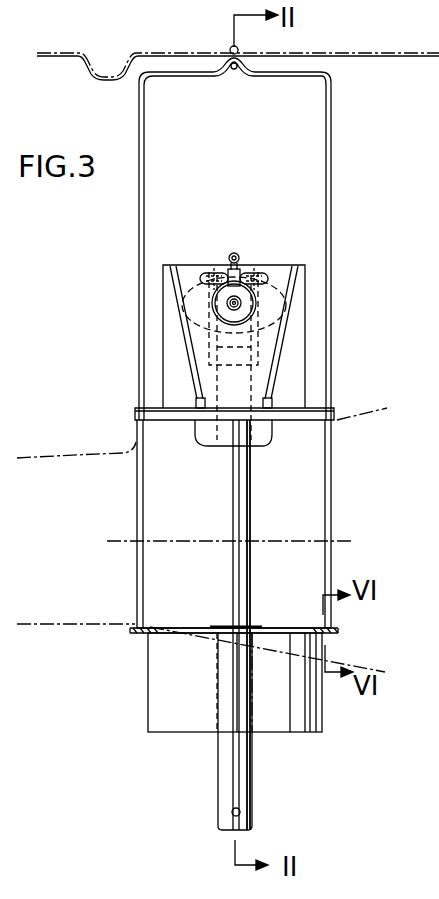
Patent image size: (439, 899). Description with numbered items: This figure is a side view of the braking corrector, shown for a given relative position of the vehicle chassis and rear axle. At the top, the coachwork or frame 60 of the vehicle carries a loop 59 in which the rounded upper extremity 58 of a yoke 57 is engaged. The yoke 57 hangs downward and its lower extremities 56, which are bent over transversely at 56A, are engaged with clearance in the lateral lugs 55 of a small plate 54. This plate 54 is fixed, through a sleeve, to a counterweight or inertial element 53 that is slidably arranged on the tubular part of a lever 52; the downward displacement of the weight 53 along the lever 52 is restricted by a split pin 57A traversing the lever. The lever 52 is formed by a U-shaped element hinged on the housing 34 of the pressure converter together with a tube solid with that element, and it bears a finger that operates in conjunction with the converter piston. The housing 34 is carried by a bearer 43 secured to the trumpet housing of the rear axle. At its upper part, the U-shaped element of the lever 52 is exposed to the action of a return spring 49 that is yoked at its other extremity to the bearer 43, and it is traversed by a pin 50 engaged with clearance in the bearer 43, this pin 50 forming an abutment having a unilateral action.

The housing 34 is at (270, 298).
The bearer 43 is at (312, 333).
The return spring 49 is at (234, 252).
The pin 50 is at (243, 274).
The lever 52 is at (246, 500).
The counterweight or inertial element 53 is at (144, 710).
The small plate 54 is at (185, 628).
The lateral lugs 55 is at (338, 630).
The extremities of the yoke 56 is at (331, 563).
The bent-over portions 56A is at (140, 640).
The yoke 57 is at (340, 450).
The split pin 57A is at (232, 812).
The upper extremity of the yoke 58 is at (245, 76).
The loop 59 is at (233, 70).
The coachwork or frame 60 is at (380, 66).